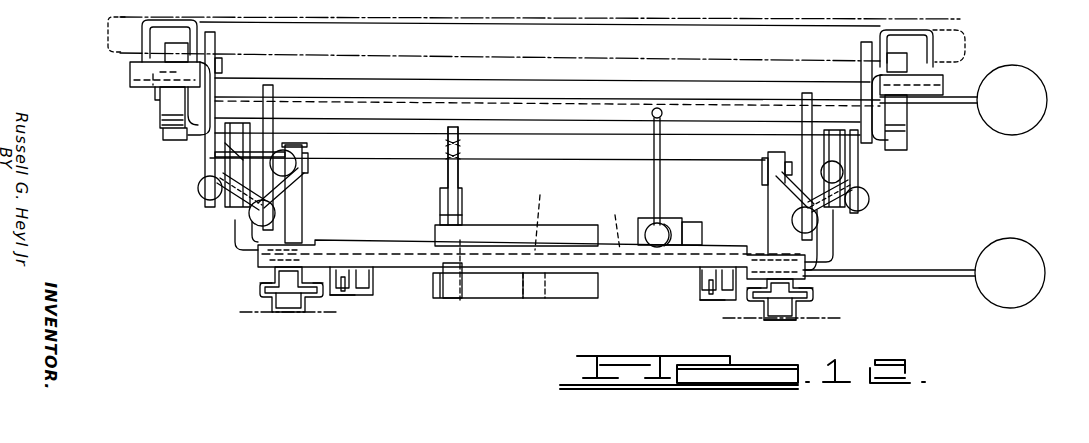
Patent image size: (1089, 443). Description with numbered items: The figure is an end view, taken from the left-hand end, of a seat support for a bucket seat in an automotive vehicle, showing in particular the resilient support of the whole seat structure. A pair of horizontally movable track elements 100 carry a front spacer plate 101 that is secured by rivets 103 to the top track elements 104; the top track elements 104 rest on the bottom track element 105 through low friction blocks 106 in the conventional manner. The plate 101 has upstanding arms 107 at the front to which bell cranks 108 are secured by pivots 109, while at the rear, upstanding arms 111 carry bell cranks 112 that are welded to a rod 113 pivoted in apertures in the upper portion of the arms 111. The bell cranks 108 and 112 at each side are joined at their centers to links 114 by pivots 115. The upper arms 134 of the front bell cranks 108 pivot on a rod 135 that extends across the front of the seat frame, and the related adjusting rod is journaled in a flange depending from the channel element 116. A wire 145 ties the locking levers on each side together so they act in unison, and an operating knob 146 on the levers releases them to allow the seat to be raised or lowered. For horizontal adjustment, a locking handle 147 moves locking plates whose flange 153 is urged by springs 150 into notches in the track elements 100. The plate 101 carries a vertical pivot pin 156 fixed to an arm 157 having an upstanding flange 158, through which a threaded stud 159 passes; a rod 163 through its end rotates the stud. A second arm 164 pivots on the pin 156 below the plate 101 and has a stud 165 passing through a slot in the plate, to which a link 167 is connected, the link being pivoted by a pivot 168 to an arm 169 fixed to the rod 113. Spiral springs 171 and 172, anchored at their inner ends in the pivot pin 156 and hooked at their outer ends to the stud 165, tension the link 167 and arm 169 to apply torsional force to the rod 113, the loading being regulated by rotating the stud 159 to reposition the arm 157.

The track elements 100 is at (250, 291).
The front spacer plate 101 is at (405, 225).
The rivets 103 is at (287, 302).
The top track elements 104 is at (258, 275).
The bottom track element 105 is at (792, 318).
The low friction blocks 106 is at (272, 290).
The upstanding arms 107 is at (300, 206).
The bell cranks 108 is at (290, 192).
The pivots 109 is at (303, 167).
The upstanding arms 111 is at (240, 160).
The bell cranks 112 is at (855, 170).
The rod 113 is at (622, 118).
The links 114 is at (226, 205).
The pivots 115 is at (198, 188).
The channel element 116 is at (200, 30).
The arms 134 is at (275, 105).
The rod 135 is at (500, 98).
The wire 145 is at (930, 35).
The operating knob 146 is at (1000, 75).
The locking handle 147 is at (1003, 243).
The springs 150 is at (380, 270).
The flange 153 is at (322, 302).
The pivot pin 156 is at (540, 213).
The arm 157 is at (617, 222).
The upstanding flange 158 is at (670, 228).
The threaded stud 159 is at (667, 238).
The rod 163 is at (653, 173).
The second arm 164 is at (463, 292).
The stud 165 is at (455, 300).
The link 167 is at (440, 218).
The pivot 168 is at (440, 215).
The arm 169 is at (458, 178).
The spiral spring 171 is at (565, 243).
The spiral spring 172 is at (538, 295).